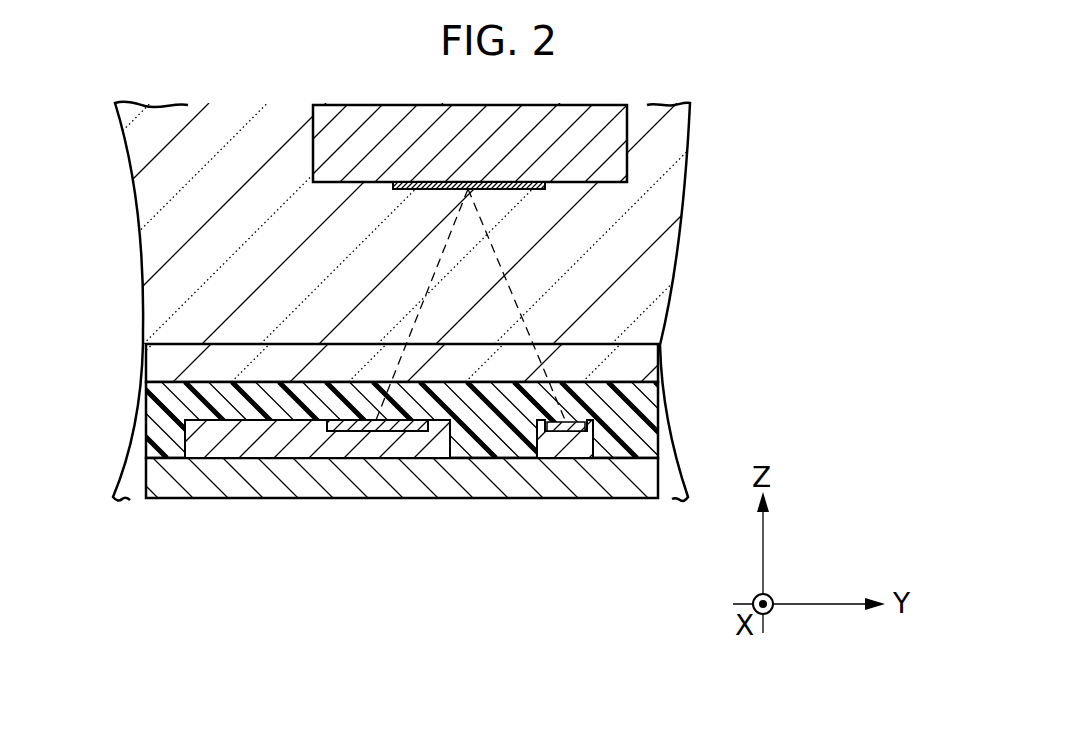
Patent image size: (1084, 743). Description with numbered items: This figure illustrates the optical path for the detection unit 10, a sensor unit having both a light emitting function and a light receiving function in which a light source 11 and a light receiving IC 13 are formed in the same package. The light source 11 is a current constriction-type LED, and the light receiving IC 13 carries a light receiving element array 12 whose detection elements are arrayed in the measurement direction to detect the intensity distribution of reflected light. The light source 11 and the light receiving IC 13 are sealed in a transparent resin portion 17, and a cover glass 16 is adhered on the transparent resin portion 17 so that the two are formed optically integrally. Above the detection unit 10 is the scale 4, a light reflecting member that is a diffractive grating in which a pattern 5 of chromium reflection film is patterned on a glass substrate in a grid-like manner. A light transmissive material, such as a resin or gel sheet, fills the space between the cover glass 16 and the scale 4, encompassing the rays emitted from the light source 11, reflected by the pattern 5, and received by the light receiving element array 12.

The scale 4 is at (607, 145).
The pattern 5 is at (518, 190).
The detection unit 10 is at (565, 587).
The light source 11 is at (555, 443).
The light receiving element array 12 is at (347, 432).
The light receiving IC 13 is at (437, 442).
The cover glass 16 is at (147, 361).
The transparent resin portion 17 is at (147, 428).